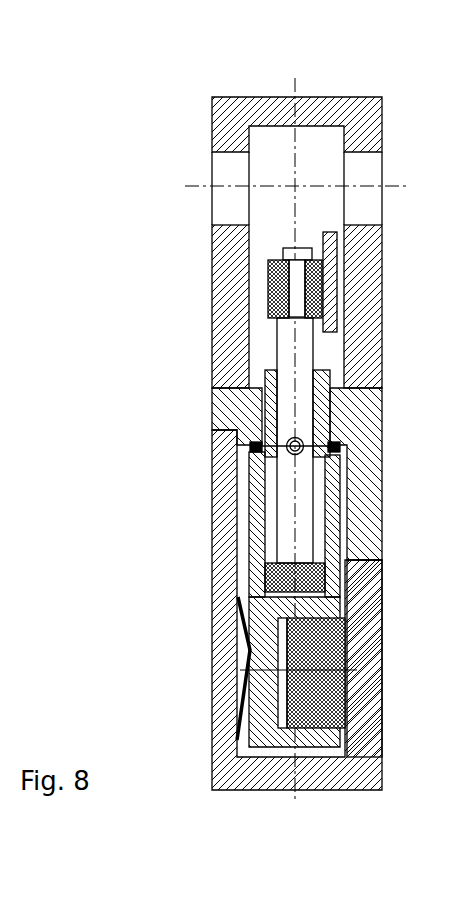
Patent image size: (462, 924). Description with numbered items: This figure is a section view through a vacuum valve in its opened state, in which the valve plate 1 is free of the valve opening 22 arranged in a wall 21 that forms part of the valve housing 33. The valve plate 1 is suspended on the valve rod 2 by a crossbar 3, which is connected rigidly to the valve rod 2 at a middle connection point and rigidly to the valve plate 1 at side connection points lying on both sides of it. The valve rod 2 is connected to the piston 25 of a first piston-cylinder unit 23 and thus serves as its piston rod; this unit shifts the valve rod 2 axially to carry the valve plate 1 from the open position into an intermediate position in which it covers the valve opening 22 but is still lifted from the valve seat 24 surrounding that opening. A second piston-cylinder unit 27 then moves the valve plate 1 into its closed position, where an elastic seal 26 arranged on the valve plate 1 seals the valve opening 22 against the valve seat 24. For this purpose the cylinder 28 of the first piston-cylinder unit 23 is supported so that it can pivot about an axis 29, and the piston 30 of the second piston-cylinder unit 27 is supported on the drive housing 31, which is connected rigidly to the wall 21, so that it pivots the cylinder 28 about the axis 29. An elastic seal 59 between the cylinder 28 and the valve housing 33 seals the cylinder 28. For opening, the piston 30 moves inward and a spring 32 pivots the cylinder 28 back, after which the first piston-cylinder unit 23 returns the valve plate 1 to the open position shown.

The valve plate 1 is at (340, 285).
The valve rod 2 is at (290, 333).
The crossbar 3 is at (268, 265).
The wall 21 is at (364, 318).
The valve opening 22 is at (362, 165).
The first piston-cylinder unit 23 is at (347, 511).
The valve seat 24 is at (350, 128).
The piston 25 is at (262, 598).
The elastic seal 26 is at (336, 328).
The second piston-cylinder unit 27 is at (303, 750).
The cylinder 28 is at (257, 519).
The axis 29 is at (252, 447).
The piston 30 is at (297, 690).
The drive housing 31 is at (372, 540).
The spring 32 is at (240, 640).
The valve housing 33 is at (392, 343).
The elastic seal 59 is at (340, 446).